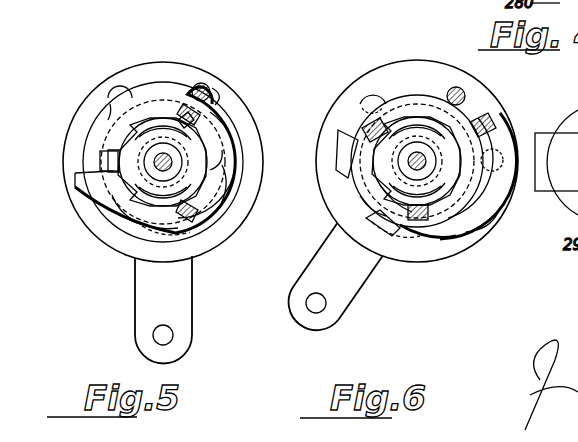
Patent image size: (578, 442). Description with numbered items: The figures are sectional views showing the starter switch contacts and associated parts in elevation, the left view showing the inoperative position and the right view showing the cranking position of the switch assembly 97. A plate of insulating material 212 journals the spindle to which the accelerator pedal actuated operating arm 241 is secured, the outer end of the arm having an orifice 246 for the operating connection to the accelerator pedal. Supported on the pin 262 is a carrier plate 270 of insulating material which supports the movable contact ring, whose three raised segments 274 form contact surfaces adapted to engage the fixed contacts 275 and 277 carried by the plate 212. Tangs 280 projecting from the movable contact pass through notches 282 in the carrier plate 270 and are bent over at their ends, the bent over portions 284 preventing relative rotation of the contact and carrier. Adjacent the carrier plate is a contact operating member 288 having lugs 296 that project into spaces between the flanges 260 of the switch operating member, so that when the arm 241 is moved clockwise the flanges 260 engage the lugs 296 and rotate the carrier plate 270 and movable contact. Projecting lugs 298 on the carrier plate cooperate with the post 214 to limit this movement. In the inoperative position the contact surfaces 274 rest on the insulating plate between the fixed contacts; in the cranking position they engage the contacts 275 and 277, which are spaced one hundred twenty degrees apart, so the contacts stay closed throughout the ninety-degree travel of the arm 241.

In FIG. 5, the actuator assembly 97 is at (158, 27).
In FIG. 5, the plate of insulating material 212 is at (74, 142).
In FIG. 6, the plate of insulating material 212 is at (458, 243).
In FIG. 5, the post 214 is at (212, 95).
In FIG. 6, the post 214 is at (461, 97).
In FIG. 5, the operating arm 241 is at (176, 317).
In FIG. 6, the operating arm 241 is at (355, 282).
In FIG. 5, the orifice 246 is at (160, 340).
In FIG. 6, the orifice 246 is at (318, 308).
In FIG. 5, the flanges 260 is at (138, 150).
In FIG. 6, the flanges 260 is at (401, 134).
In FIG. 5, the pin 262 is at (166, 158).
In FIG. 6, the pin 262 is at (420, 157).
In FIG. 5, the carrier plate 270 is at (197, 153).
In FIG. 6, the carrier plate 270 is at (446, 120).
In FIG. 5, the raised segments 274 is at (206, 226).
In FIG. 6, the raised segments 274 is at (456, 229).
In FIG. 5, the fixed contact 275 is at (118, 91).
In FIG. 6, the fixed contact 275 is at (373, 93).
In FIG. 5, the fixed contact 277 is at (233, 170).
In FIG. 6, the fixed contact 277 is at (498, 166).
In FIG. 5, the tangs 280 is at (213, 144).
In FIG. 6, the tangs 280 is at (377, 128).
In FIG. 5, the notches 282 is at (198, 122).
In FIG. 6, the notches 282 is at (482, 128).
In FIG. 5, the bent over portions 284 is at (192, 88).
In FIG. 6, the bent over portions 284 is at (419, 221).
In FIG. 5, the contact operating member 288 is at (125, 210).
In FIG. 6, the contact operating member 288 is at (392, 186).
In FIG. 5, the lugs 296 is at (150, 224).
In FIG. 6, the lugs 296 is at (376, 212).
In FIG. 5, the projecting lugs 298 is at (222, 100).
In FIG. 6, the projecting lugs 298 is at (502, 136).